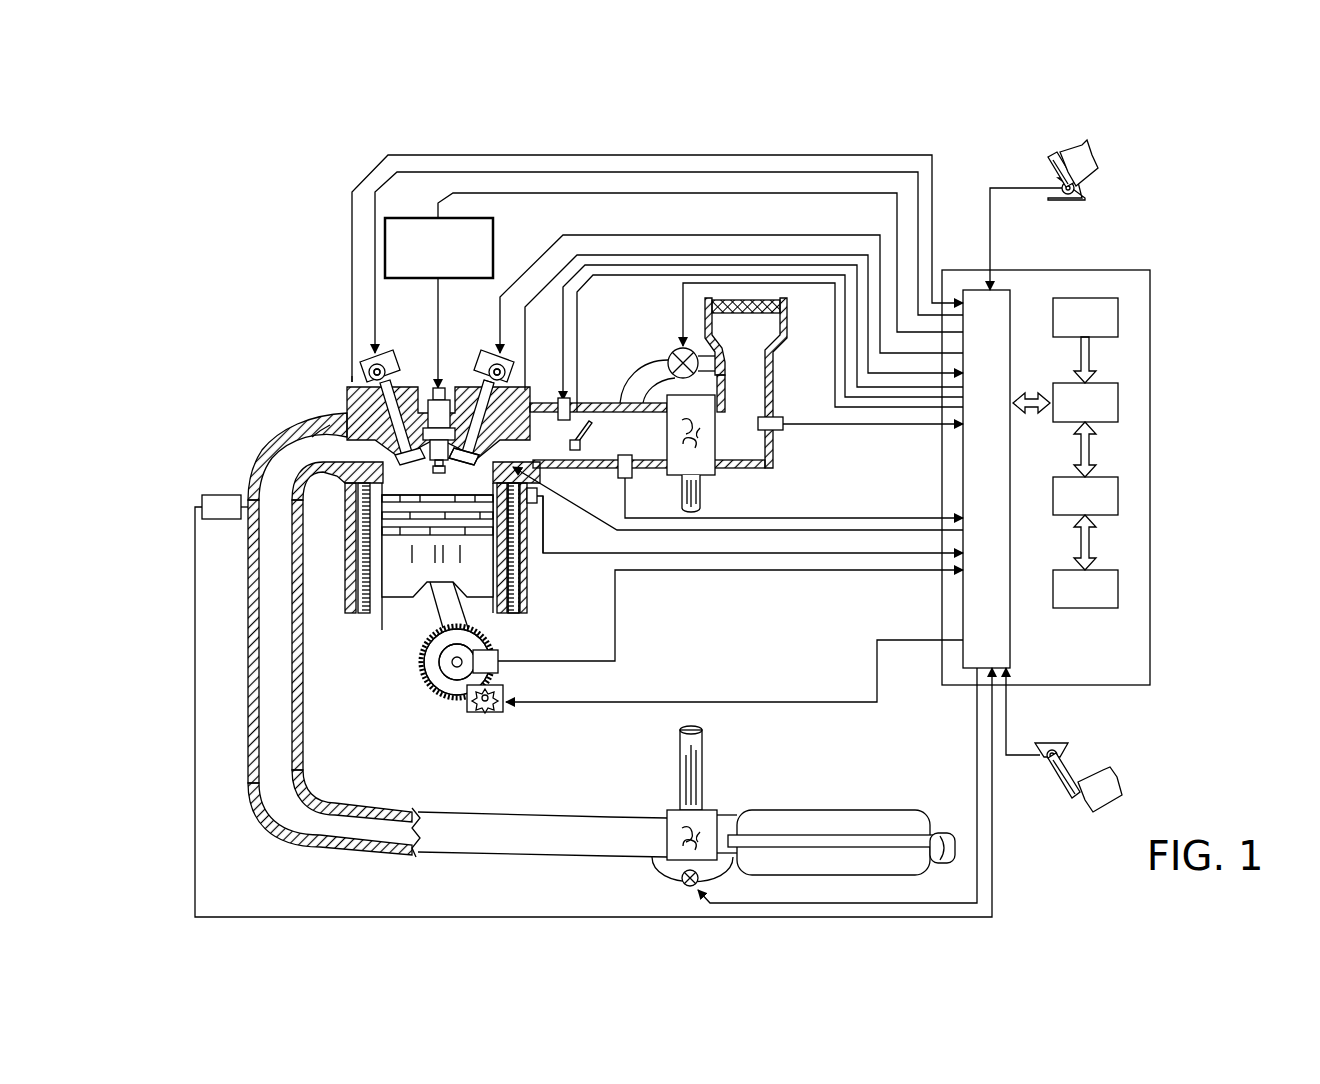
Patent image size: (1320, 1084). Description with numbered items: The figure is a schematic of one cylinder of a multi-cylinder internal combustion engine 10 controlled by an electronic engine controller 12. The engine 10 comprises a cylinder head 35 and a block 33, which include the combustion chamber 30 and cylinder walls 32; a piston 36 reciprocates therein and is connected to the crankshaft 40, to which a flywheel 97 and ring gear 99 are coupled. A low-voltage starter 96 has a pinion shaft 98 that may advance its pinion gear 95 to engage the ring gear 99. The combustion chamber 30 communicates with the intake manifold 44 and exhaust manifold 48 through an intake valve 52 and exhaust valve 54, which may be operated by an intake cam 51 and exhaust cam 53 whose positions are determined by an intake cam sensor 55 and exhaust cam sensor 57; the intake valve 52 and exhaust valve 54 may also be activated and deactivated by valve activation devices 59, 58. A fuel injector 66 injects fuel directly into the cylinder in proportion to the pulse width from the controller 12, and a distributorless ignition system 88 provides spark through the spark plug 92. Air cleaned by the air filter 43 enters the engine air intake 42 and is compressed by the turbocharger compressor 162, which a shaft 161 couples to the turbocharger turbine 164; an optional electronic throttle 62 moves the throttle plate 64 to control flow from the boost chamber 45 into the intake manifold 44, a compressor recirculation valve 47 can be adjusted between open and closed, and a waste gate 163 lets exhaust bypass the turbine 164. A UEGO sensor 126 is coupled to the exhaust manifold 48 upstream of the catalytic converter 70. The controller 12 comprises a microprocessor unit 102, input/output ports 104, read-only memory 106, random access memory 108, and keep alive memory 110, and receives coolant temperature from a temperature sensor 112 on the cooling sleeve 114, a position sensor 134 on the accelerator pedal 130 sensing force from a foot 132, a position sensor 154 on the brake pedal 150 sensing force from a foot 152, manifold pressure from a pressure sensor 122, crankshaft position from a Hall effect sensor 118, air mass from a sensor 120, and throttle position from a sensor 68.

The internal combustion engine 10 is at (292, 347).
The electronic engine controller 12 is at (1152, 270).
The combustion chamber 30 is at (435, 503).
The cylinder walls 32 is at (384, 630).
The block 33 is at (343, 517).
The cylinder head 35 is at (344, 384).
The piston 36 is at (432, 605).
The crankshaft 40 is at (437, 685).
The engine air intake 42 is at (640, 322).
The air filter 43 is at (758, 322).
The intake manifold 44 is at (534, 447).
The boost chamber 45 is at (619, 447).
The compressor recirculation valve 47 is at (672, 350).
The exhaust manifold 48 is at (304, 453).
The intake cam 51 is at (490, 352).
The intake valve 52 is at (478, 455).
The exhaust cam 53 is at (387, 352).
The exhaust valve 54 is at (340, 425).
The intake cam sensor 55 is at (503, 382).
The exhaust cam sensor 57 is at (362, 376).
The valve activation device 58 is at (390, 372).
The valve activation device 59 is at (496, 376).
The electronic throttle 62 is at (586, 436).
The throttle plate 64 is at (580, 447).
The fuel injector 66 is at (537, 497).
The throttle position sensor 68 is at (560, 412).
The catalytic converter 70 is at (773, 808).
The distributorless ignition system 88 is at (404, 218).
The spark plug 92 is at (440, 380).
The pinion gear 95 is at (489, 708).
The starter 96 is at (493, 712).
The flywheel 97 is at (425, 672).
The pinion shaft 98 is at (478, 708).
The ring gear 99 is at (450, 695).
The microprocessor unit 102 is at (1120, 400).
The input/output ports 104 is at (1012, 298).
The read-only memory 106 is at (1120, 316).
The random access memory 108 is at (1120, 490).
The keep alive memory 110 is at (1120, 584).
The temperature sensor 112 is at (543, 515).
The cooling sleeve 114 is at (528, 580).
The Hall effect sensor 118 is at (500, 660).
The air mass sensor 120 is at (782, 418).
The pressure sensor 122 is at (618, 476).
The UEGO sensor 126 is at (202, 500).
The accelerator pedal 130 is at (1099, 170).
The foot 132 is at (1095, 152).
The position sensor 134 is at (1080, 192).
The brake pedal 150 is at (1064, 767).
The foot 152 is at (1104, 770).
The position sensor 154 is at (1044, 750).
The shaft 161 is at (680, 490).
The turbocharger compressor 162 is at (700, 460).
The waste gate 163 is at (684, 886).
The turbocharger turbine 164 is at (667, 812).